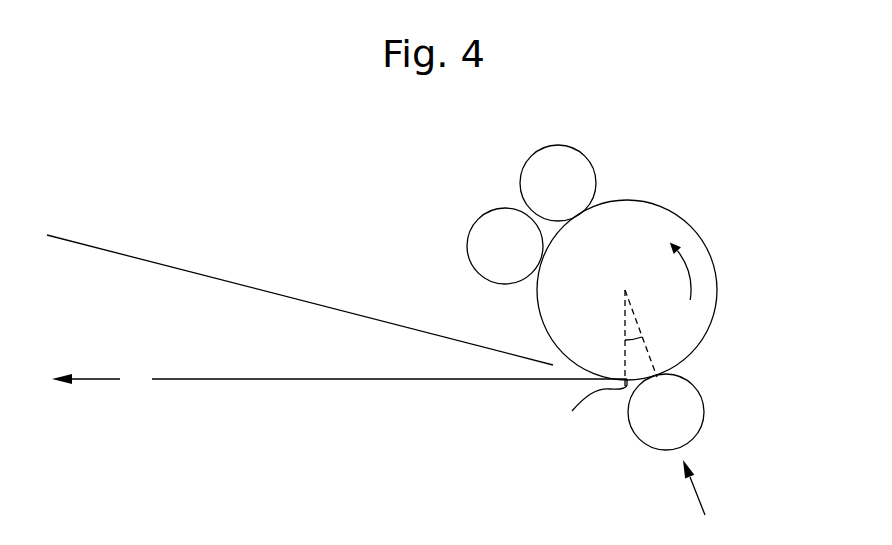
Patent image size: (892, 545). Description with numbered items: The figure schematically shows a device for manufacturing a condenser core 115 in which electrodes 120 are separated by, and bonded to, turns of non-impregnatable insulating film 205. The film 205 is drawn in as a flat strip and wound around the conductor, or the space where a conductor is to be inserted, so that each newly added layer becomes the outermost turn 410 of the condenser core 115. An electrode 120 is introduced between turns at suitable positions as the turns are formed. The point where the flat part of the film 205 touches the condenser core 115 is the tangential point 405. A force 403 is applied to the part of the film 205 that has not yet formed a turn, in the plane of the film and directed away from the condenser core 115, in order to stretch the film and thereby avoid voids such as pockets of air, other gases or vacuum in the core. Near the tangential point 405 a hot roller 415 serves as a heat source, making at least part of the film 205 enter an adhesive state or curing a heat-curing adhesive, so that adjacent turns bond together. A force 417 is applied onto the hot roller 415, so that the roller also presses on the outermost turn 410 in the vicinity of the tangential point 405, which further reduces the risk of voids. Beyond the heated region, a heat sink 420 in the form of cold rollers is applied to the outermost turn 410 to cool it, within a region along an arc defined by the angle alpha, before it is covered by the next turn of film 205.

The electrode 120 is at (327, 307).
The non-impregnatable insulating film 205 is at (263, 379).
The force 403 is at (95, 379).
The tangential point 405 is at (580, 406).
The outermost turn 410 is at (717, 278).
The condenser core 115 is at (642, 238).
The hot roller 415 is at (698, 438).
The force 417 is at (697, 498).
The heat sink 420 is at (520, 178).